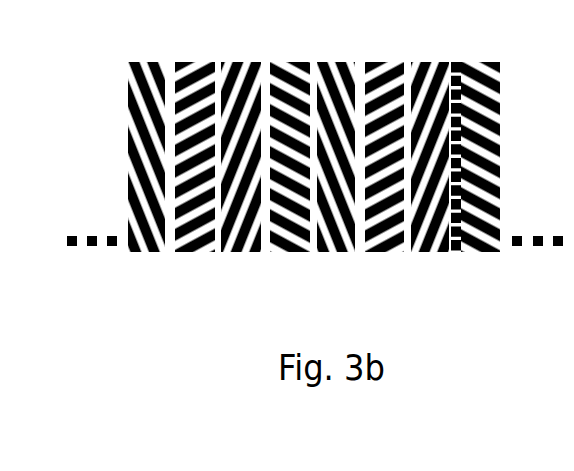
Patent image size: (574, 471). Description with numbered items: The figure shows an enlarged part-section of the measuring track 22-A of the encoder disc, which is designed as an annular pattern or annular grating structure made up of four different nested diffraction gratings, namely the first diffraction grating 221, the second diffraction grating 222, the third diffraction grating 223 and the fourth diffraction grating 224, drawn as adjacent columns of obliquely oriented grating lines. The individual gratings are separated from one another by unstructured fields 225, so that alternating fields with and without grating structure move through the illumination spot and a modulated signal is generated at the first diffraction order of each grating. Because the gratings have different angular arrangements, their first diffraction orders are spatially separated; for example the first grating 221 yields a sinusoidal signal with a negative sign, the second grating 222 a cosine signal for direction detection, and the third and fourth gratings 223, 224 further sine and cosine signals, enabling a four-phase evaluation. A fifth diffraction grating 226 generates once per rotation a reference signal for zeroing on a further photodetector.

The part-section of the measuring track 22-A is at (103, 156).
The first diffraction grating 221 is at (164, 255).
The second diffraction grating 222 is at (210, 255).
The third diffraction grating 223 is at (262, 255).
The fourth diffraction grating 224 is at (310, 255).
The unstructured field 225 is at (177, 58).
The fifth diffraction grating for zero setting 226 is at (463, 255).